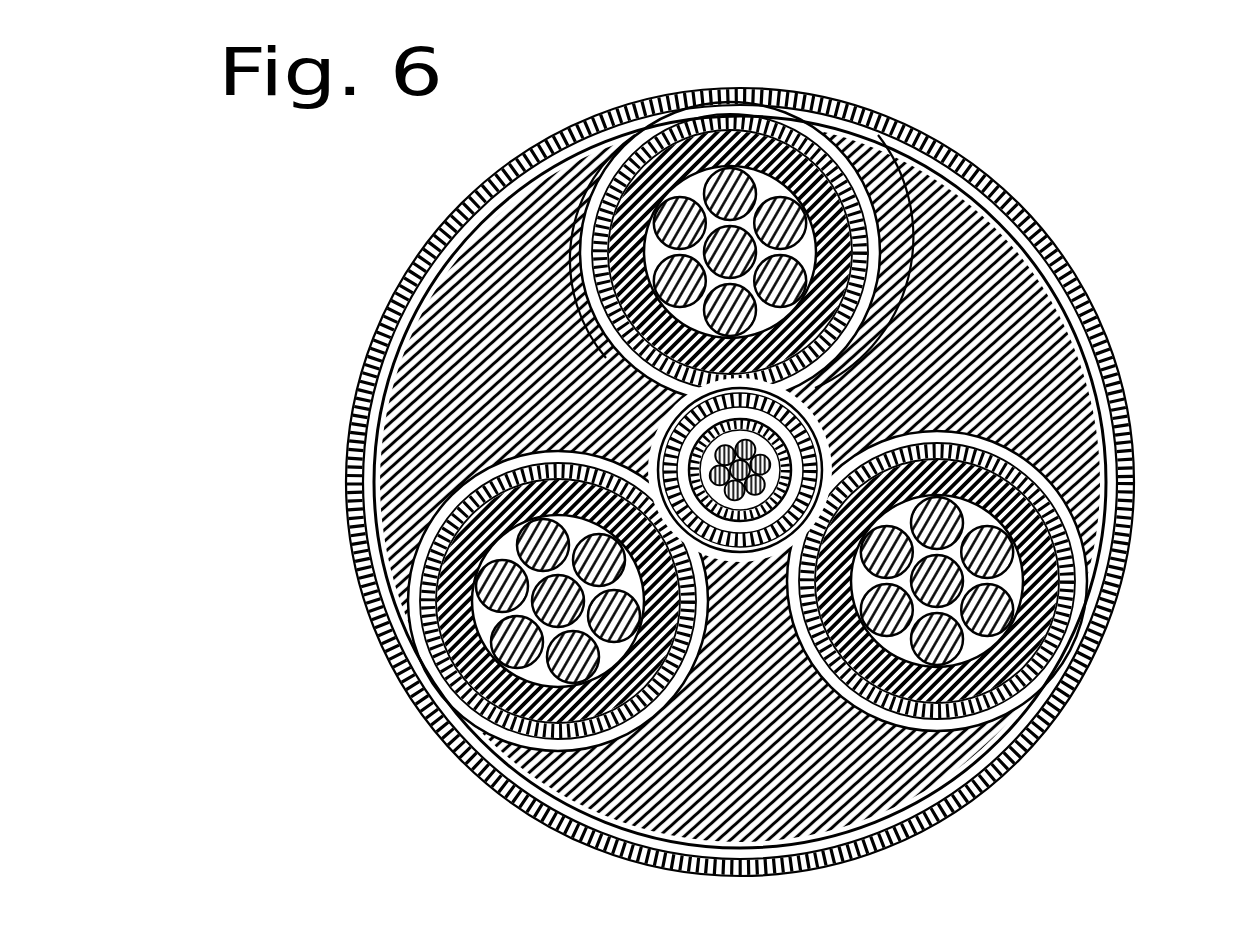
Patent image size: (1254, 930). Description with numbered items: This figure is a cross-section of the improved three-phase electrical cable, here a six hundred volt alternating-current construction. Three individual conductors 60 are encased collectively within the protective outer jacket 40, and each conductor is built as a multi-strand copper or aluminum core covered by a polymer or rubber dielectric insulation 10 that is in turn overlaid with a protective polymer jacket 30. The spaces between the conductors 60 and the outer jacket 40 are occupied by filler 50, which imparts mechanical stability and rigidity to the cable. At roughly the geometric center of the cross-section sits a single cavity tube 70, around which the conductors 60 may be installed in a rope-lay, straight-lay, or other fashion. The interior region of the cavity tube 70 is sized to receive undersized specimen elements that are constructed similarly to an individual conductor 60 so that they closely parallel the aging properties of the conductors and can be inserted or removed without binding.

The dielectric insulation 10 is at (1048, 563).
The protective polymer jacket 30 is at (418, 636).
The outer jacket 40 is at (912, 125).
The filler 50 is at (1010, 300).
The individual conductor 60 is at (418, 724).
The cavity tube 70 is at (683, 415).